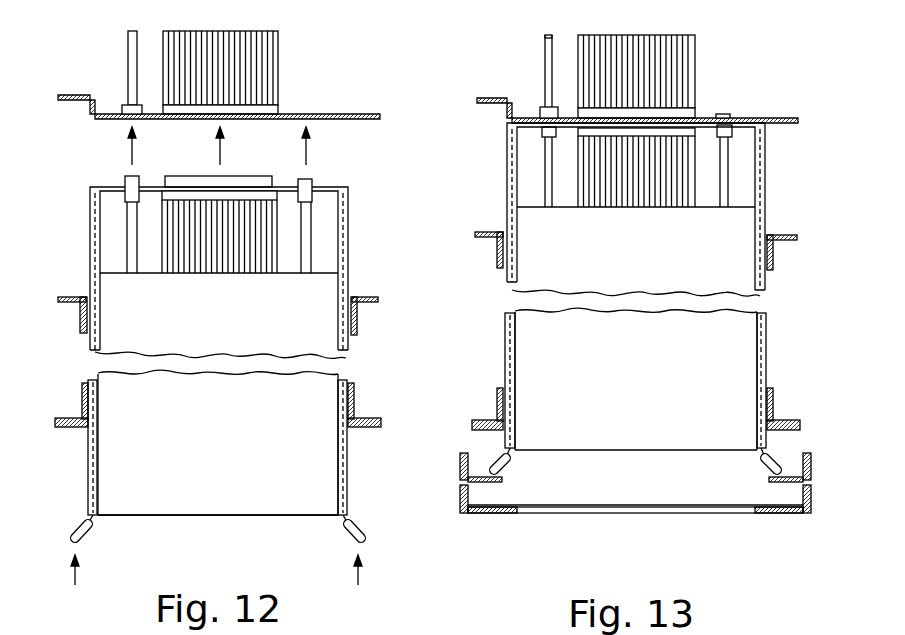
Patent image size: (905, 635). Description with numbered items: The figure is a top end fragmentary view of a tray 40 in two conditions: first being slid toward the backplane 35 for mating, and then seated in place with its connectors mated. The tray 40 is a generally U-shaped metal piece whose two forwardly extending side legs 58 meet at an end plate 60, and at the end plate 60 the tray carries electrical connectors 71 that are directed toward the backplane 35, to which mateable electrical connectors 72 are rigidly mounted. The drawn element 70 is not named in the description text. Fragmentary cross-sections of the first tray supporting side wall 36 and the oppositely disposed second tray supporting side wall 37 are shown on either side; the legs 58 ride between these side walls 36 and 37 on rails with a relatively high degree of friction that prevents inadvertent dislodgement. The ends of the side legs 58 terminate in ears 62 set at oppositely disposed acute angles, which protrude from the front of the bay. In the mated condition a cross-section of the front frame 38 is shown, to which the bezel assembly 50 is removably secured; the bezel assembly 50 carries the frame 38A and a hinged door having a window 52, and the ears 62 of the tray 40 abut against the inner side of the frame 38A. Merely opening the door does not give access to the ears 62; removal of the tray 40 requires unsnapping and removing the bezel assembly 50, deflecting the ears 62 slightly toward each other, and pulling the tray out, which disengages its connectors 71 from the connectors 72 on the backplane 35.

In FIG. 12, the backplane 35 is at (330, 120).
In FIG. 13, the backplane 35 is at (726, 160).
In FIG. 12, the first tray supporting side wall 36 is at (80, 403).
In FIG. 13, the first tray supporting side wall 36 is at (497, 400).
In FIG. 12, the second tray supporting side wall 37 is at (354, 405).
In FIG. 13, the second tray supporting side wall 37 is at (774, 400).
In FIG. 12, the front frame 38 is at (70, 428).
In FIG. 13, the front frame 38 is at (472, 425).
In FIG. 13, the frame 38A is at (460, 465).
In FIG. 12, the tray 40 is at (229, 456).
In FIG. 13, the tray 40 is at (647, 400).
In FIG. 13, the bezel assembly 50 is at (478, 512).
In FIG. 13, the window 52 is at (633, 513).
In FIG. 12, the side legs 58 is at (88, 485).
In FIG. 13, the side legs 58 is at (516, 432).
In FIG. 12, the end plate 60 is at (326, 187).
In FIG. 13, the end plate 60 is at (720, 163).
In FIG. 12, the ears 62 is at (91, 533).
In FIG. 13, the ears 62 is at (508, 463).
In FIG. 12, the bottom plate of module 70 is at (218, 517).
In FIG. 13, the bottom plate of module 70 is at (635, 450).
In FIG. 12, the electrical connectors 71 is at (239, 179).
In FIG. 13, the electrical connectors 71 is at (578, 134).
In FIG. 12, the electrical connectors 72 is at (248, 114).
In FIG. 13, the electrical connectors 72 is at (684, 108).